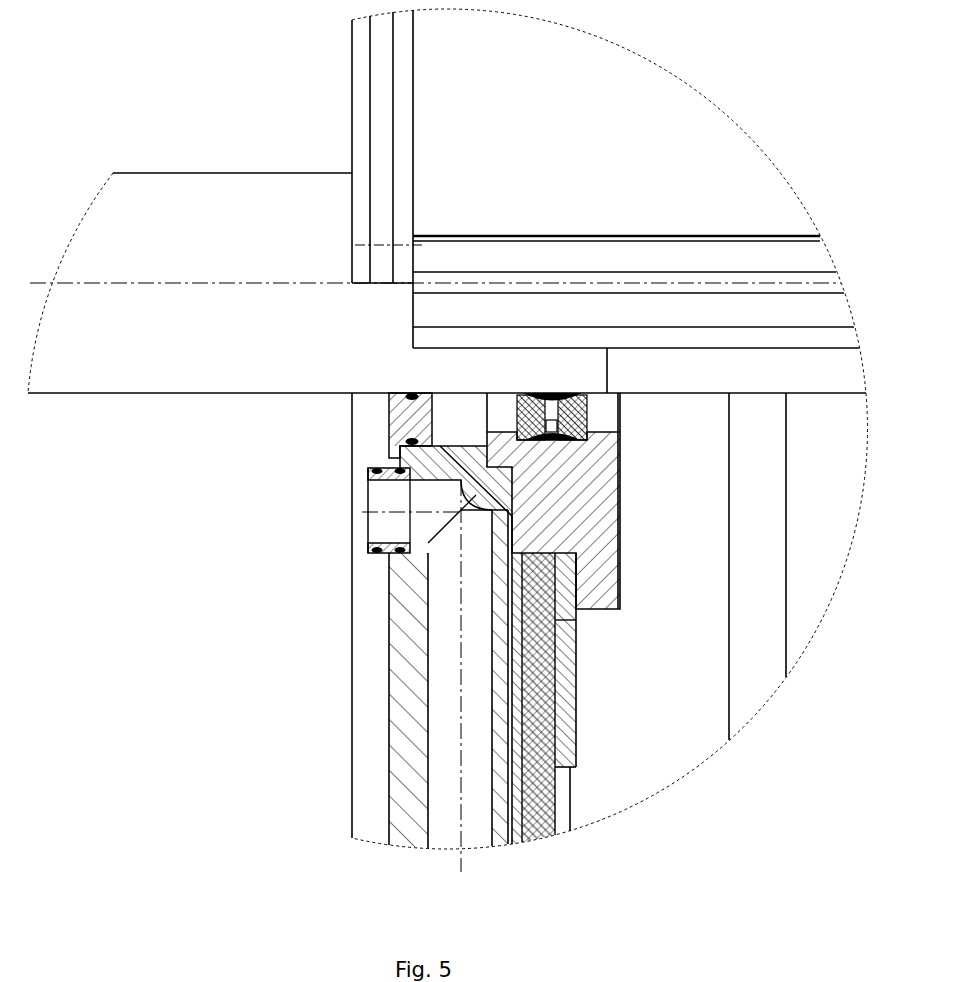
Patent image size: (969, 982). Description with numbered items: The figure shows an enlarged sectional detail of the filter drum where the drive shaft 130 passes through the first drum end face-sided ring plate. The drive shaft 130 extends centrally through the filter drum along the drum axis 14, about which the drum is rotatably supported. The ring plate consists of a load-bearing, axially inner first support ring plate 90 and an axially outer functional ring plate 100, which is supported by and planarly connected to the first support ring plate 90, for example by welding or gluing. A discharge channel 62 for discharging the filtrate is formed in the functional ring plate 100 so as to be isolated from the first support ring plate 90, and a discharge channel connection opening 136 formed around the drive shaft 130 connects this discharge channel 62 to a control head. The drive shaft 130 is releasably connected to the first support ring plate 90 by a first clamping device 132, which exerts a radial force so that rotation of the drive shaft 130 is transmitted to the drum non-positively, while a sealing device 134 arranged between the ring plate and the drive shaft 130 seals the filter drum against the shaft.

The drum axis 14 is at (118, 283).
The drive shaft 130 is at (115, 210).
The sealing device 134 is at (407, 421).
The discharge channel connection opening 136 is at (368, 498).
The first clamping device 132 is at (573, 423).
The functional ring plate 100 is at (400, 816).
The discharge channel 62 is at (475, 833).
The first support ring plate 90 is at (540, 817).